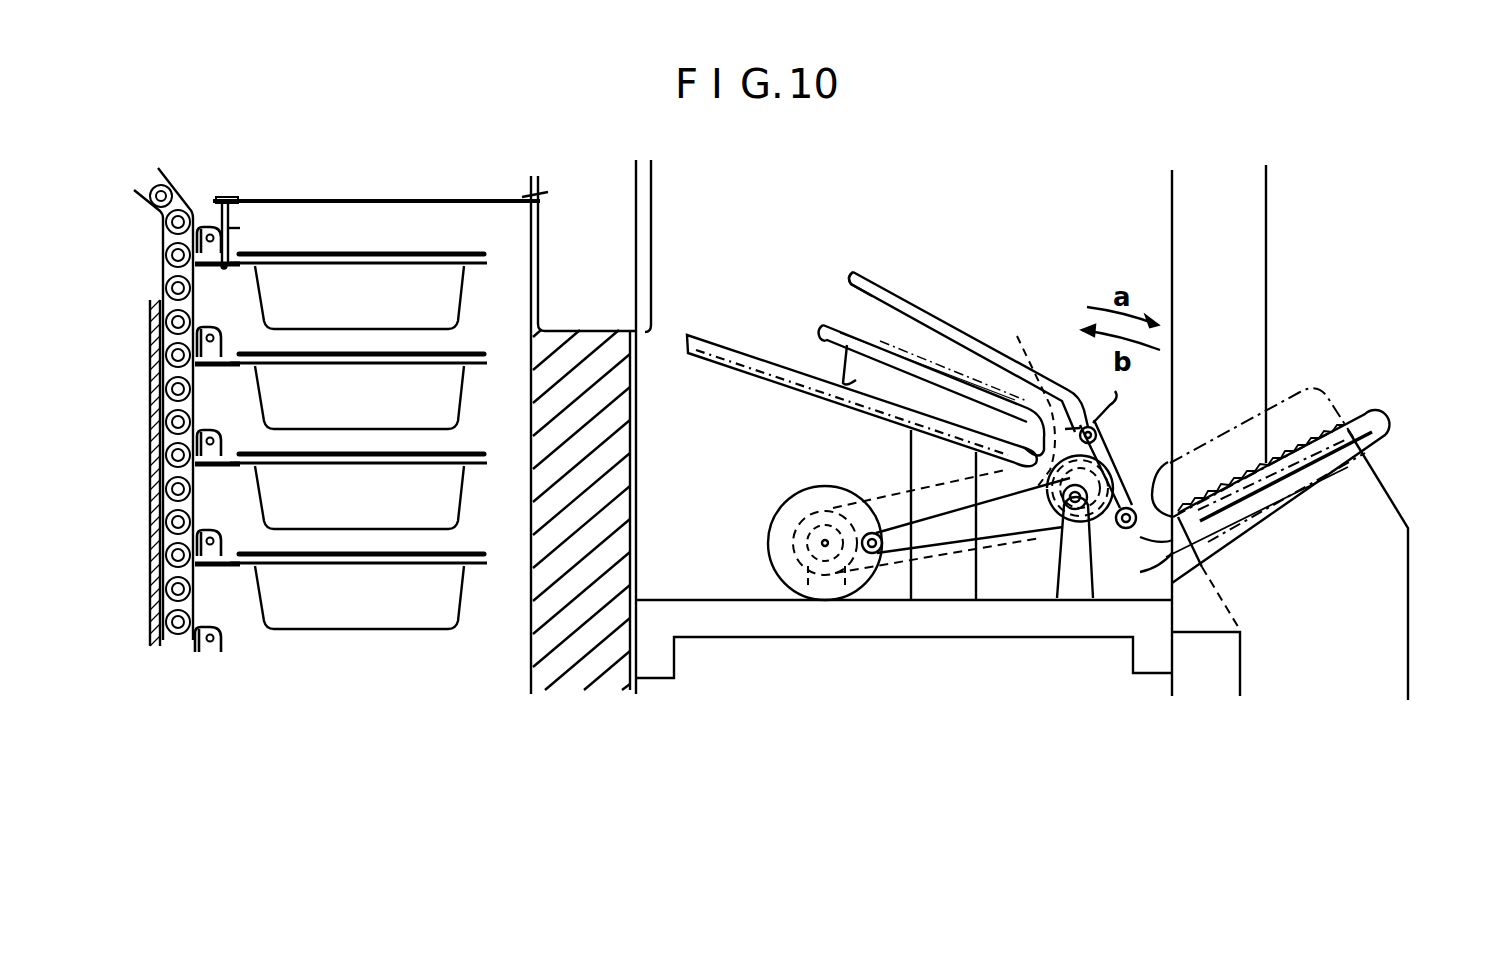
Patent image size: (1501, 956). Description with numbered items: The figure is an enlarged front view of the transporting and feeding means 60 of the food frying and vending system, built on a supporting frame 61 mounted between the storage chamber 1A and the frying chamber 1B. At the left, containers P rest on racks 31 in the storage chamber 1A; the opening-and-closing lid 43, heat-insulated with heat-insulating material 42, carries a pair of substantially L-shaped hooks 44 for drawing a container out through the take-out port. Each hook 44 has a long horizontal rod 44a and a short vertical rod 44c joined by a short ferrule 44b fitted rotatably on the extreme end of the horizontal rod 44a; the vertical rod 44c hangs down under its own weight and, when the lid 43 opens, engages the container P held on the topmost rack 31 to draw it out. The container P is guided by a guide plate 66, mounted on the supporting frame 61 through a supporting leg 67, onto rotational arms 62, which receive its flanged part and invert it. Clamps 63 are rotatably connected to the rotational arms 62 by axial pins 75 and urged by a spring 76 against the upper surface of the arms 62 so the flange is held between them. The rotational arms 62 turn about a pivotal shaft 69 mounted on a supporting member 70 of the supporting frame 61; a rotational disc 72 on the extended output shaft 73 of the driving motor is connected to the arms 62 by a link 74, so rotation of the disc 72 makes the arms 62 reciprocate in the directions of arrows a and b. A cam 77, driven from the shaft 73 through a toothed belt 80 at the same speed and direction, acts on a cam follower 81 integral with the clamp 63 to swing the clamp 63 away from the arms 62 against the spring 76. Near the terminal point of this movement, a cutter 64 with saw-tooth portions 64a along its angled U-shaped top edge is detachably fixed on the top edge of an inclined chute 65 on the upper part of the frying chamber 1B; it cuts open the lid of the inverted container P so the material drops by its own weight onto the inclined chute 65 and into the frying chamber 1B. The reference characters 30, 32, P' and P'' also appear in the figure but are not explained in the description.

The conveyor chain 30 is at (162, 250).
The rack 31 is at (248, 265).
The chain guide rail 32 is at (150, 433).
The heat-insulating material 42 is at (530, 196).
The opening-and-closing lid 43 is at (652, 186).
The hook 44 is at (312, 198).
The horizontal rod 44a is at (410, 199).
The ferrule 44b is at (225, 198).
The vertical rod 44c is at (232, 228).
The transporting and feeding means 60 is at (946, 317).
The supporting frame 61 is at (758, 622).
The rotational arms 62 is at (822, 328).
The clamp 63 is at (858, 277).
The cutter 64 is at (1355, 470).
The saw-tooth portions 64a is at (1330, 394).
The inclined chute 65 is at (1388, 600).
The guide plate 66 is at (722, 352).
The supporting leg 67 is at (938, 600).
The pivotal shaft 69 is at (1116, 502).
The supporting member 70 is at (1080, 585).
The rotational disc 72 is at (792, 495).
The extended output shaft 73 is at (822, 544).
The link 74 is at (1004, 538).
The axial pins 75 is at (1088, 427).
The spring 76 is at (1118, 390).
The cam 77 is at (1040, 500).
The toothed belt 80 is at (880, 522).
The cam follower 81 is at (1027, 399).
The storage chamber 1A is at (520, 470).
The frying chamber 1B is at (1280, 222).
The container P is at (367, 441).
The tray in transfer position P' is at (815, 356).
The tray in receiving position P'' is at (1321, 352).